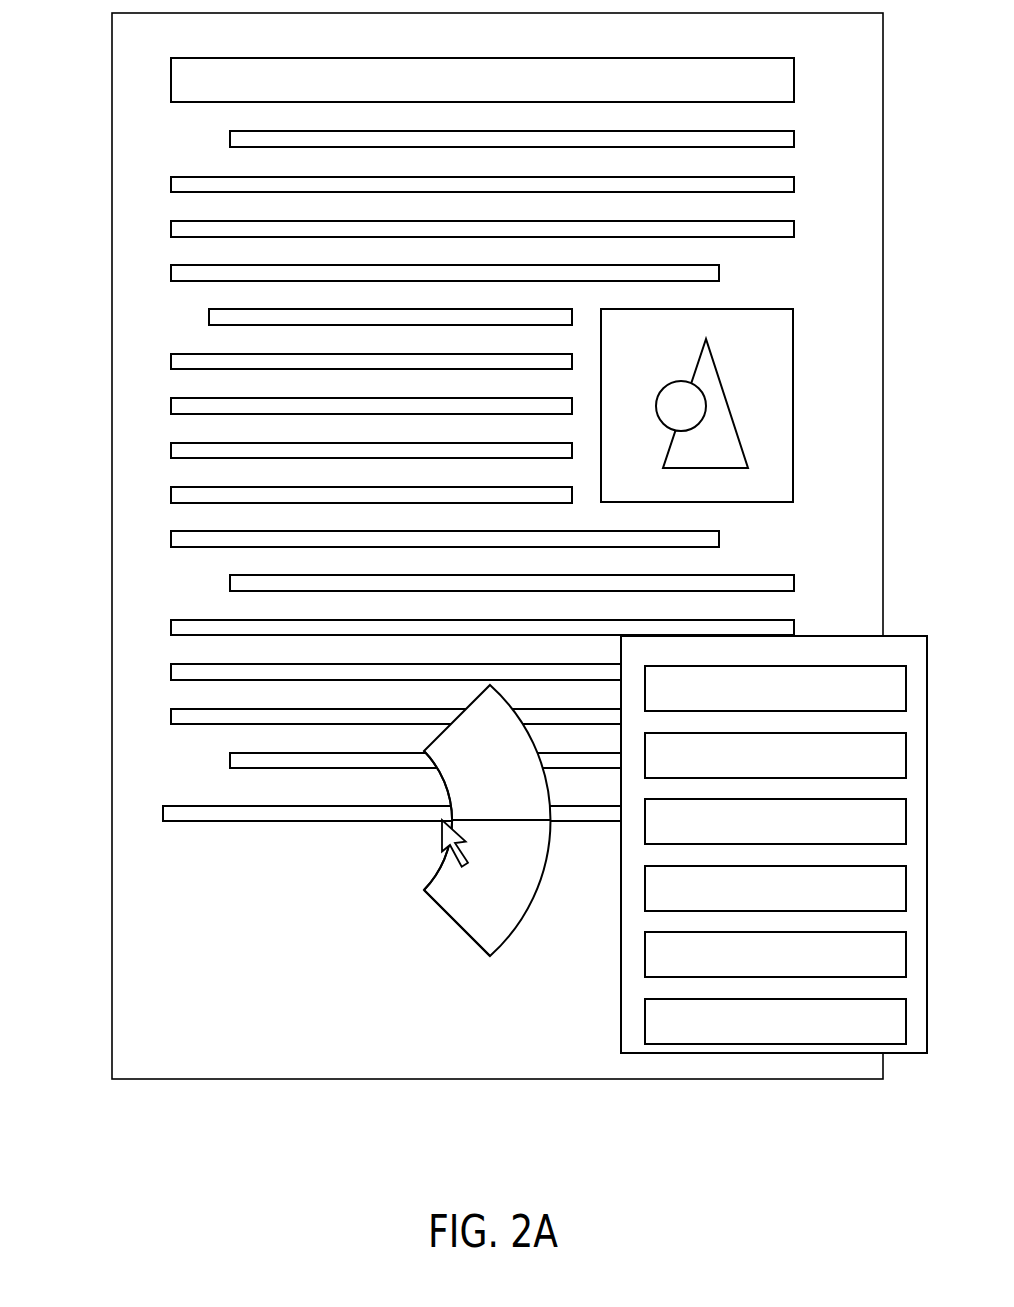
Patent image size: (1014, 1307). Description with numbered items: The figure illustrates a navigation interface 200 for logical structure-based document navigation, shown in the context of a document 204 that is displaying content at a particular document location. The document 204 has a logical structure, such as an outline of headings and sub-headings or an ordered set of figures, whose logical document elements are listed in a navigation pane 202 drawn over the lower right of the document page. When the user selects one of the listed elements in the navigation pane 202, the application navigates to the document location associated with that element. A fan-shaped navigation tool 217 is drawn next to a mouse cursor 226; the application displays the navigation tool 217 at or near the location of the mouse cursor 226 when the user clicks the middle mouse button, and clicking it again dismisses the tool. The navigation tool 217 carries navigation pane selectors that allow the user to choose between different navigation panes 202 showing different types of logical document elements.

The navigation interface 200 is at (469, 583).
The navigation pane 202 is at (720, 844).
The document 204 is at (92, 127).
The navigation tool 217 is at (473, 940).
The mouse cursor 226 is at (440, 845).